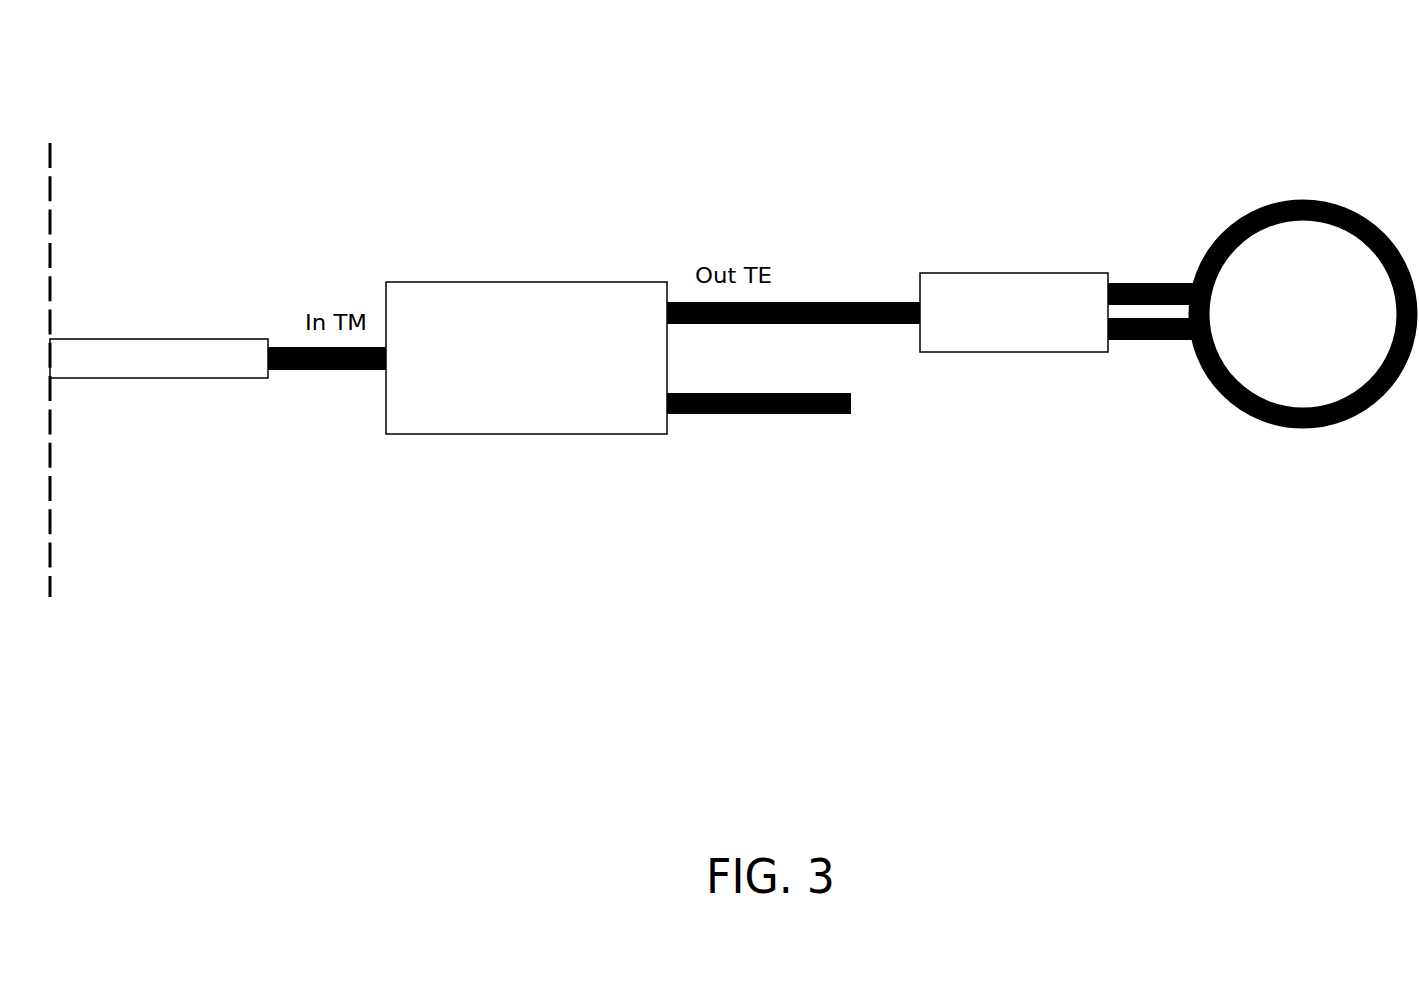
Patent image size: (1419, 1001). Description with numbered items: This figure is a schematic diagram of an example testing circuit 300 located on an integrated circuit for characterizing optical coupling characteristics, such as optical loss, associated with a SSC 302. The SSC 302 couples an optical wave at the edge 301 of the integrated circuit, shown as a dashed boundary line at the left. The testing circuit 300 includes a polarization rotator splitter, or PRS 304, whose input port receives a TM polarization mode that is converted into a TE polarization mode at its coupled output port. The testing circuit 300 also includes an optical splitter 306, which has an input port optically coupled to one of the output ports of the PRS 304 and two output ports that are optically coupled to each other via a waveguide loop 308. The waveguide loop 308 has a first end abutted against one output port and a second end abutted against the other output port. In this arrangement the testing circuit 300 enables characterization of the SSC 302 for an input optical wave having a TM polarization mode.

The testing circuit 300 is at (815, 78).
The edge 301 is at (50, 163).
The SSC 302 is at (207, 372).
The polarization rotator splitter 304 is at (547, 401).
The optical splitter 306 is at (1034, 326).
The waveguide loop 308 is at (1263, 207).